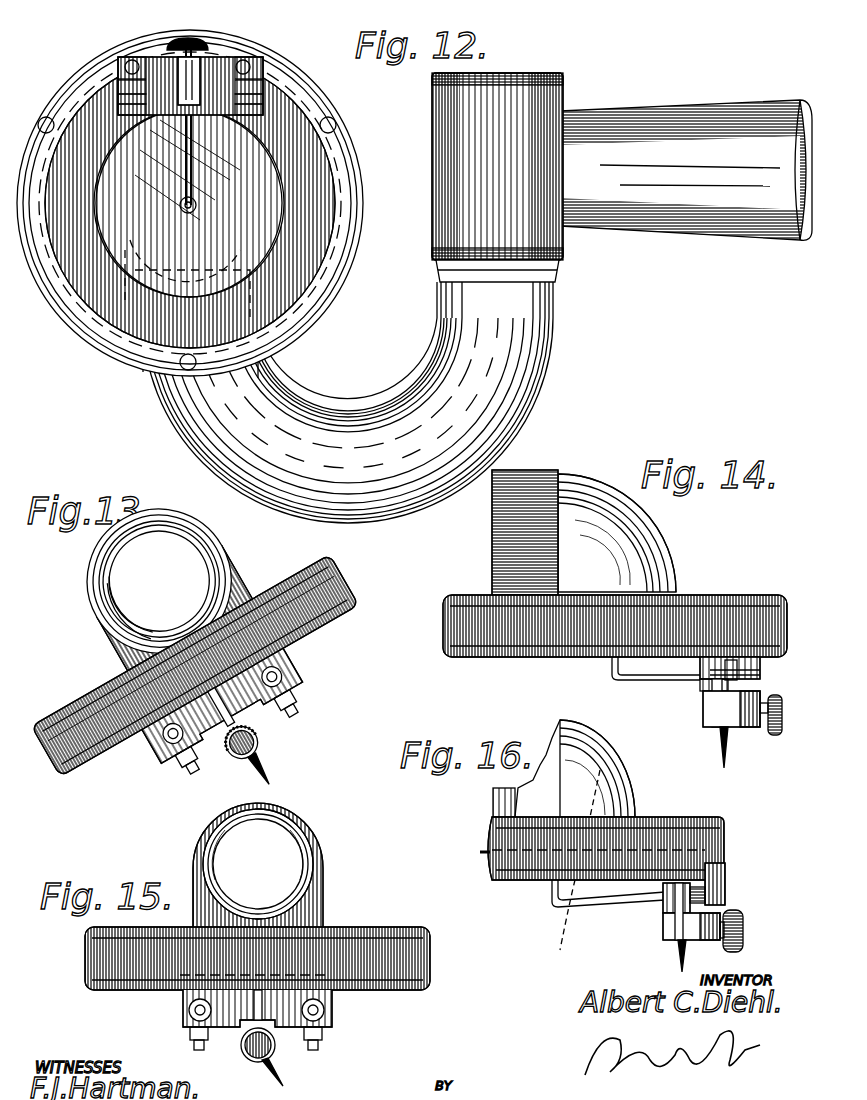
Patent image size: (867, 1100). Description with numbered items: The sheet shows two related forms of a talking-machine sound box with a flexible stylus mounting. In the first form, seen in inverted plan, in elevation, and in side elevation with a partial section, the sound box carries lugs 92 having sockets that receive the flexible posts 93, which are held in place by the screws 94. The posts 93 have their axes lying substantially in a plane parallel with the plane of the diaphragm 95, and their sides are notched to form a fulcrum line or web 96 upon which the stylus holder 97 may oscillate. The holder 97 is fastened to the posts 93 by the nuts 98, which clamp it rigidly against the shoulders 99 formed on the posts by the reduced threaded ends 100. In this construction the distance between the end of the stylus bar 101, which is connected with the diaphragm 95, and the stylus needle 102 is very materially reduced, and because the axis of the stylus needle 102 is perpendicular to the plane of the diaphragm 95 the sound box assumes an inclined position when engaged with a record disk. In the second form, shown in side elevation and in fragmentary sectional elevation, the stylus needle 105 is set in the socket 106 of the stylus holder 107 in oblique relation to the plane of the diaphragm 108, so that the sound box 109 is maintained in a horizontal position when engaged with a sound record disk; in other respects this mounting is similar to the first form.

In FIG. 12, the lugs 92 is at (130, 60).
In FIG. 13, the lugs 92 is at (296, 668).
In FIG. 14, the lugs 92 is at (761, 659).
In FIG. 12, the flexible posts 93 is at (130, 60).
In FIG. 14, the flexible posts 93 is at (757, 676).
In FIG. 12, the screws 94 is at (130, 72).
In FIG. 13, the screws 94 is at (293, 711).
In FIG. 14, the screws 94 is at (743, 724).
In FIG. 12, the diaphragm 95 is at (265, 207).
In FIG. 12, the fulcrum line or web 96 is at (128, 87).
In FIG. 14, the fulcrum line or web 96 is at (735, 704).
In FIG. 12, the stylus holder 97 is at (262, 147).
In FIG. 13, the stylus holder 97 is at (255, 712).
In FIG. 14, the stylus holder 97 is at (708, 694).
In FIG. 12, the nuts 98 is at (128, 110).
In FIG. 13, the nuts 98 is at (297, 679).
In FIG. 14, the nuts 98 is at (705, 688).
In FIG. 12, the shoulders 99 is at (290, 90).
In FIG. 14, the shoulders 99 is at (690, 690).
In FIG. 12, the reduced threaded ends 100 is at (160, 128).
In FIG. 13, the reduced threaded ends 100 is at (298, 688).
In FIG. 14, the reduced threaded ends 100 is at (680, 665).
In FIG. 15, the reduced threaded ends 100 is at (258, 865).
In FIG. 16, the reduced threaded ends 100 is at (564, 768).
In FIG. 12, the stylus bar 101 is at (190, 173).
In FIG. 13, the stylus bar 101 is at (250, 725).
In FIG. 14, the stylus bar 101 is at (705, 684).
In FIG. 12, the stylus needle 102 is at (210, 57).
In FIG. 13, the stylus needle 102 is at (268, 780).
In FIG. 14, the stylus needle 102 is at (720, 752).
In FIG. 15, the stylus needle 105 is at (278, 1070).
In FIG. 16, the stylus needle 105 is at (678, 967).
In FIG. 15, the socket 106 is at (243, 1060).
In FIG. 16, the socket 106 is at (703, 932).
In FIG. 15, the stylus holder 107 is at (288, 1017).
In FIG. 16, the stylus holder 107 is at (676, 924).
In FIG. 16, the diaphragm 108 is at (567, 928).
In FIG. 14, the sound box 109 is at (615, 626).
In FIG. 15, the sound box 109 is at (430, 958).
In FIG. 16, the sound box 109 is at (725, 849).